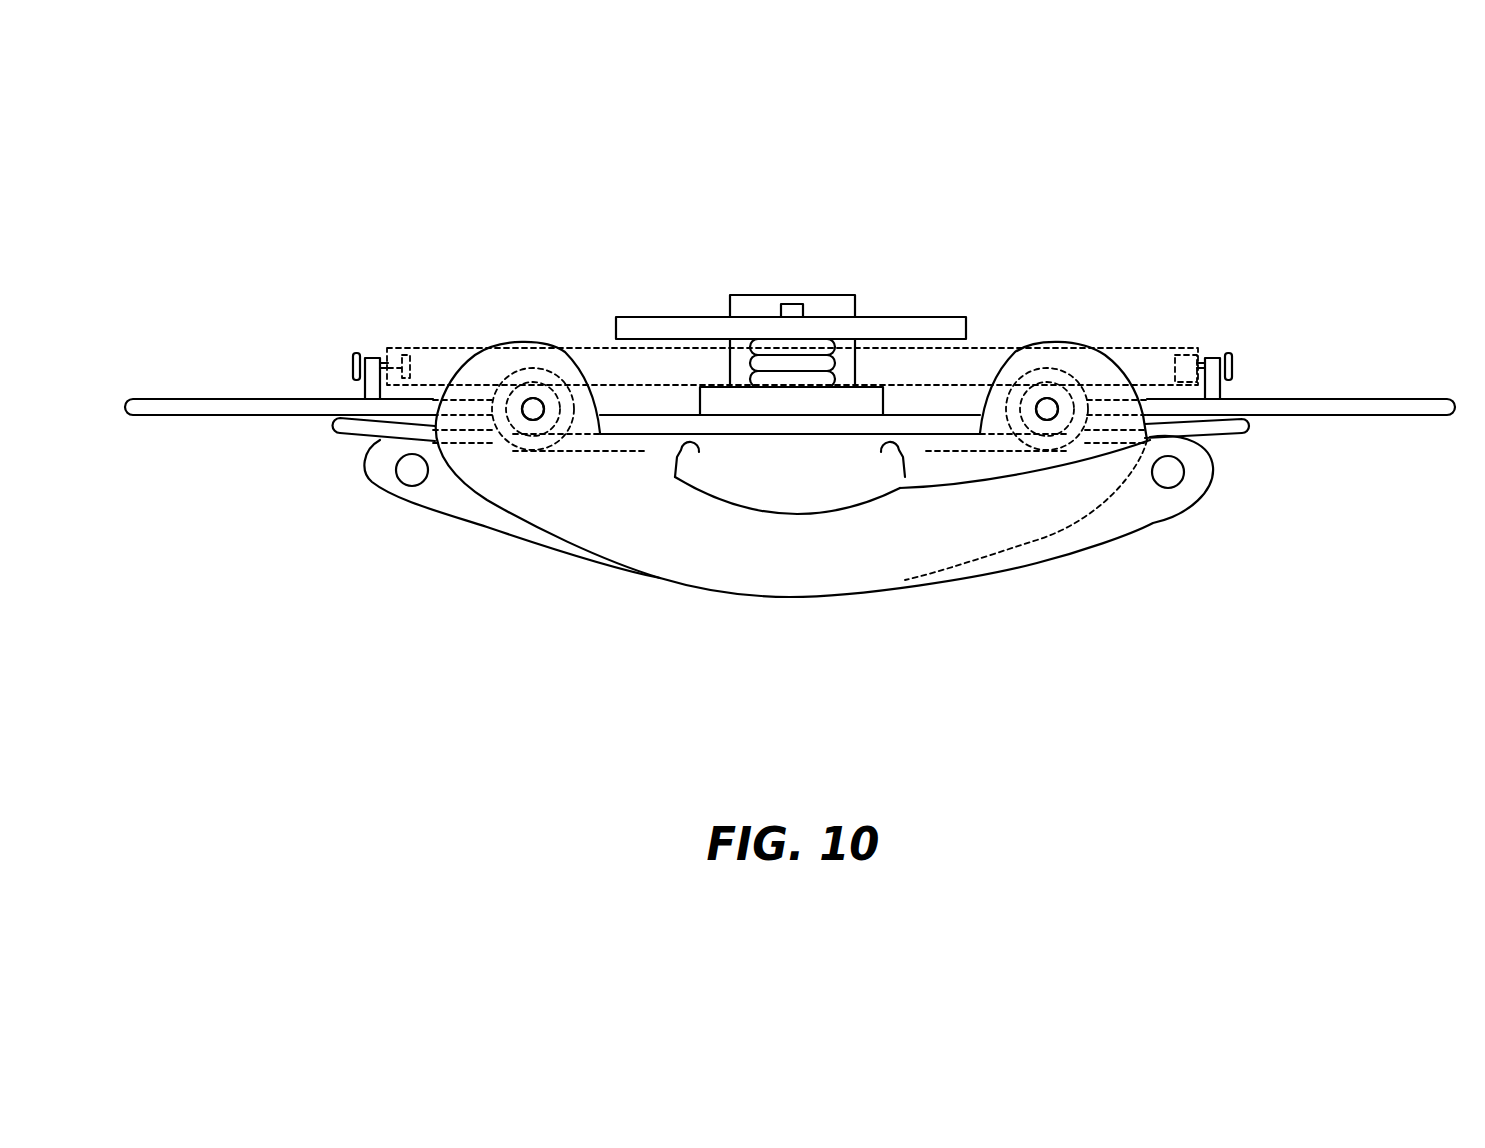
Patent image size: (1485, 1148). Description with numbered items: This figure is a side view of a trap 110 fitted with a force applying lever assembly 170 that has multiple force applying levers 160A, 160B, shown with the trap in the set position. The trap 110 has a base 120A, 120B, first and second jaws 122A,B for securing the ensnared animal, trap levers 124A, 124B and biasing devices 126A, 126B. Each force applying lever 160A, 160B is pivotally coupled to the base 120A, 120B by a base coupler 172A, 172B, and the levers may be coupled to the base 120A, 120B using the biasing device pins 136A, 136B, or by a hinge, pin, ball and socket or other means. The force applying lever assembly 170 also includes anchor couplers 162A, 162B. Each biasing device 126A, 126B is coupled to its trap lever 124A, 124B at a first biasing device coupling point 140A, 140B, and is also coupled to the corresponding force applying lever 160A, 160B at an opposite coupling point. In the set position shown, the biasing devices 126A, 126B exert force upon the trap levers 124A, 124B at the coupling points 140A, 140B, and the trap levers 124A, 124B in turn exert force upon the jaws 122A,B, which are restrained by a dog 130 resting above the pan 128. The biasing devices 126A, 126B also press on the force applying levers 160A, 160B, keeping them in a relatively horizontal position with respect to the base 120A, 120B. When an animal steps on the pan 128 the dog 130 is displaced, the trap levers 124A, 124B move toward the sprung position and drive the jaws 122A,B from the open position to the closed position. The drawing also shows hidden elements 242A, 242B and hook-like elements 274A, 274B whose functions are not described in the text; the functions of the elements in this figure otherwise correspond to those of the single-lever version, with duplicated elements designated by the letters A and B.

The trap 110 is at (260, 248).
The base 120A is at (817, 408).
The base 120B is at (758, 428).
The first and second jaws 122A,B is at (440, 358).
The trap lever 124A is at (276, 405).
The trap lever 124B is at (1316, 405).
The biasing device 126A is at (560, 375).
The biasing device 126B is at (1019, 375).
The pan 128 is at (905, 327).
The dog 130 is at (788, 304).
The biasing device pin 136A is at (533, 418).
The biasing device pin 136B is at (1047, 418).
The first biasing device coupling point 140A is at (352, 428).
The first biasing device coupling point 140B is at (1240, 428).
The force applying lever 160A is at (503, 362).
The force applying lever 160B is at (1081, 358).
The anchor coupler 162A is at (1168, 482).
The anchor coupler 162B is at (412, 480).
The force applying lever assembly 170 is at (691, 699).
The base coupler 172A is at (548, 420).
The base coupler 172B is at (1032, 420).
The first hidden link 242A is at (648, 434).
The second hidden link 242B is at (926, 434).
The first hook 274A is at (692, 447).
The second hook 274B is at (888, 447).